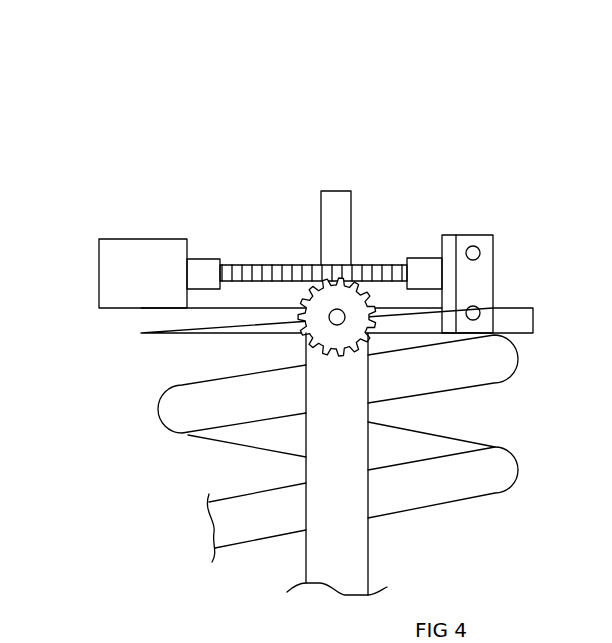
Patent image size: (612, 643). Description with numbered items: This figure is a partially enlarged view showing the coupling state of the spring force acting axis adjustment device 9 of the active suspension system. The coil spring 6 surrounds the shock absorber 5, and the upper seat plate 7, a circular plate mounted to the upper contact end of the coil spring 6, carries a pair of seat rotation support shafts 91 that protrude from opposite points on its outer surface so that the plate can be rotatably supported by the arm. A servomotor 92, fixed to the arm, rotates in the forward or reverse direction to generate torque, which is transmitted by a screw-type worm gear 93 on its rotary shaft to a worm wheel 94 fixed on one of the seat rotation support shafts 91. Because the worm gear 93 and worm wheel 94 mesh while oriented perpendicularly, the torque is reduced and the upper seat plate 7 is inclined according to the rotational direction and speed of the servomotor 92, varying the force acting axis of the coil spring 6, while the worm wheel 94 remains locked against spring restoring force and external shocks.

The shock absorber 5 is at (332, 472).
The coil spring 6 is at (180, 410).
The upper seat plate 7 is at (423, 313).
The spring force acting axis adjustment device 9 is at (147, 82).
The seat rotation support shafts 91 is at (334, 312).
The servomotor 92 is at (142, 239).
The worm gear 93 is at (243, 265).
The worm wheel 94 is at (363, 283).